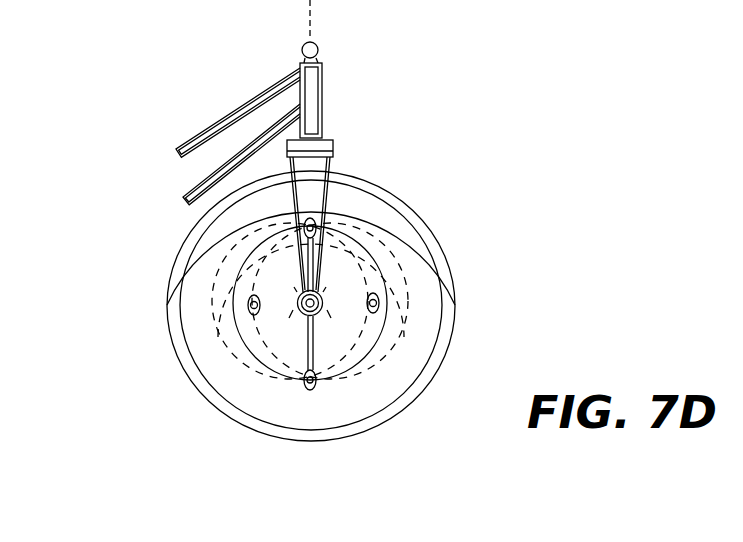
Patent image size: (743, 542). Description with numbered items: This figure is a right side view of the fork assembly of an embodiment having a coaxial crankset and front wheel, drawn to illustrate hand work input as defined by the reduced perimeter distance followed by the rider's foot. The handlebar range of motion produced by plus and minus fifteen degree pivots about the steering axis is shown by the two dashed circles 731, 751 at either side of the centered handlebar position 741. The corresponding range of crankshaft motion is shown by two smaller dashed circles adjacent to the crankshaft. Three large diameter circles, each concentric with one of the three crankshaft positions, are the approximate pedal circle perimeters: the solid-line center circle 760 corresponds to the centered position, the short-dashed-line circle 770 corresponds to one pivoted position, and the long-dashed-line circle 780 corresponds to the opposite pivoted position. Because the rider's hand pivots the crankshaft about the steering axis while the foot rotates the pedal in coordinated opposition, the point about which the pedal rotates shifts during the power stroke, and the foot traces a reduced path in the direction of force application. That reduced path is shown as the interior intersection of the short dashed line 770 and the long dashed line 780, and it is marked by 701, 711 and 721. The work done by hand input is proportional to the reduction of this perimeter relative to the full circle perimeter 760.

The foot path marker 701 is at (249, 306).
The foot path marker 711 is at (318, 223).
The foot path marker 721 is at (380, 303).
The dashed circle 731 is at (333, 50).
The centered handlebar position 741 is at (320, 56).
The dashed circle 751 is at (288, 48).
The center circle 760 is at (395, 321).
The short-dashed-line circle 770 is at (253, 331).
The long-dashed-line circle 780 is at (358, 338).